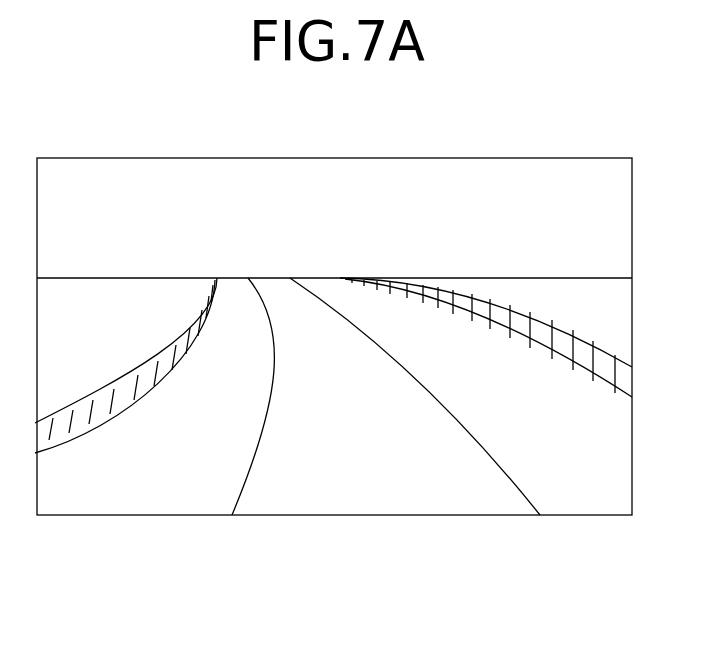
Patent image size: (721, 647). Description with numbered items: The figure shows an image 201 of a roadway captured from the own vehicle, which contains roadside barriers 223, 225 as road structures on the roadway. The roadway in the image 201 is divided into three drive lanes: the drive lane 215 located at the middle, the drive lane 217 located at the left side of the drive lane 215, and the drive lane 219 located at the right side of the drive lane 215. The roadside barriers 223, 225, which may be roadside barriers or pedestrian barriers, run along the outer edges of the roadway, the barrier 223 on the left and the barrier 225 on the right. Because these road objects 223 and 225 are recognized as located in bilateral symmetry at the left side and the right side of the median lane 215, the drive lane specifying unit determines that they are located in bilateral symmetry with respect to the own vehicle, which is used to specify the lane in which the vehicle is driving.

The image 201 is at (485, 158).
The drive lane 215 is at (355, 475).
The drive lane 217 is at (140, 473).
The drive lane 219 is at (585, 478).
The roadside barrier 223 is at (166, 370).
The roadside barrier 225 is at (518, 332).